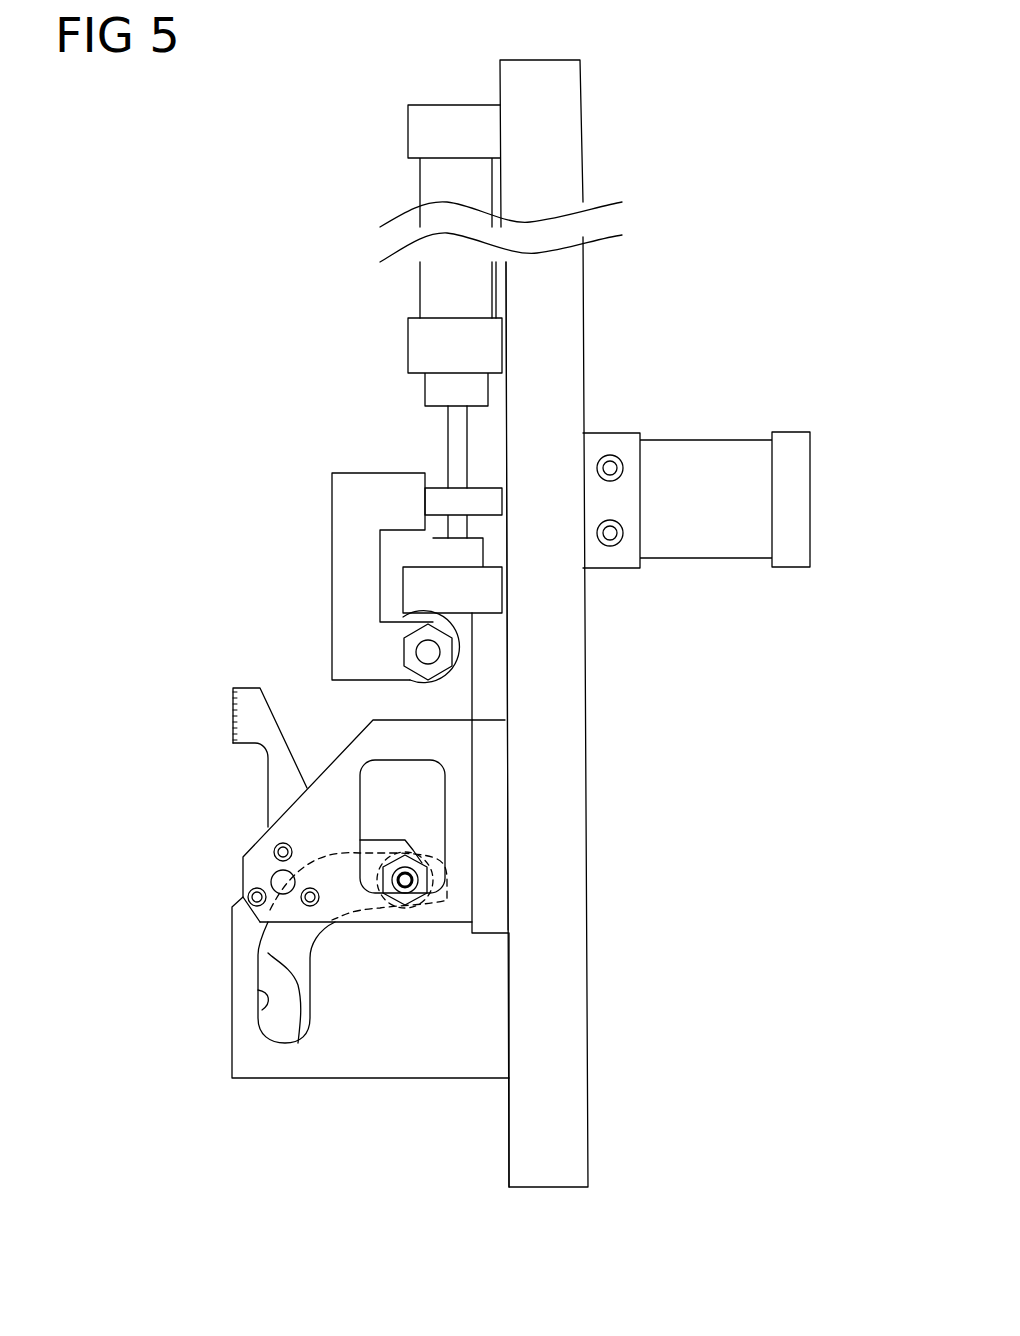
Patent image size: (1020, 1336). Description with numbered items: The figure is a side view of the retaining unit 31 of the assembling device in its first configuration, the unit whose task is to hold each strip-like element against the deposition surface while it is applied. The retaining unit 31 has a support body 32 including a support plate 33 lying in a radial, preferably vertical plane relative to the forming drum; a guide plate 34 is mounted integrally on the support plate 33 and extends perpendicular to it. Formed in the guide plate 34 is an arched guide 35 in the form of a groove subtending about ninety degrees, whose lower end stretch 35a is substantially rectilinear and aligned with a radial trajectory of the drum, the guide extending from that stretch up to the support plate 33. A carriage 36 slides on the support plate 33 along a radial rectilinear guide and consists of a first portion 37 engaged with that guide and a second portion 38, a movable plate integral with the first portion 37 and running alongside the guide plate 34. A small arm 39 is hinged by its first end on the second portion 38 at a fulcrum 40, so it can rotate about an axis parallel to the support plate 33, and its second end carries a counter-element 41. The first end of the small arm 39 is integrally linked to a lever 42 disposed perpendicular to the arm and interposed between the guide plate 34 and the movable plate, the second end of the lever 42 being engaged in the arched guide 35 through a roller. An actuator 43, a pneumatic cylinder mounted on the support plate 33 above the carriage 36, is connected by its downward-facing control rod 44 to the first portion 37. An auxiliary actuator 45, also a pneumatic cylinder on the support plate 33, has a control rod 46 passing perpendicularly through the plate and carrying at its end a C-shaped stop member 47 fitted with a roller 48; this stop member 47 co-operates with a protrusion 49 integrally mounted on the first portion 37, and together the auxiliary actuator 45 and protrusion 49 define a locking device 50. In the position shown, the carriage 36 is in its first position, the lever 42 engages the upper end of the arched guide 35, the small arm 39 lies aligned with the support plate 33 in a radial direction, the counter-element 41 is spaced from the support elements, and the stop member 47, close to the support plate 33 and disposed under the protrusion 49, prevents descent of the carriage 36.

The retaining unit 31 is at (689, 258).
The support body 32 is at (608, 1087).
The support plate 33 is at (560, 988).
The guide plate 34 is at (399, 1044).
The arched guide 35 is at (280, 962).
The lower end stretch 35a is at (258, 1010).
The carriage 36 is at (240, 860).
The first portion 37 is at (490, 813).
The second portion 38 is at (258, 858).
The small arm 39 is at (256, 782).
The fulcrum 40 is at (278, 883).
The counter-element 41 is at (248, 712).
The lever 42 is at (387, 847).
The actuator 43 is at (412, 179).
The control rod 44 is at (458, 425).
The auxiliary actuator 45 is at (701, 420).
The control rod 46 is at (476, 502).
The stop member 47 is at (392, 652).
The roller 48 is at (458, 653).
The protrusion 49 is at (470, 587).
The locking device 50 is at (381, 441).